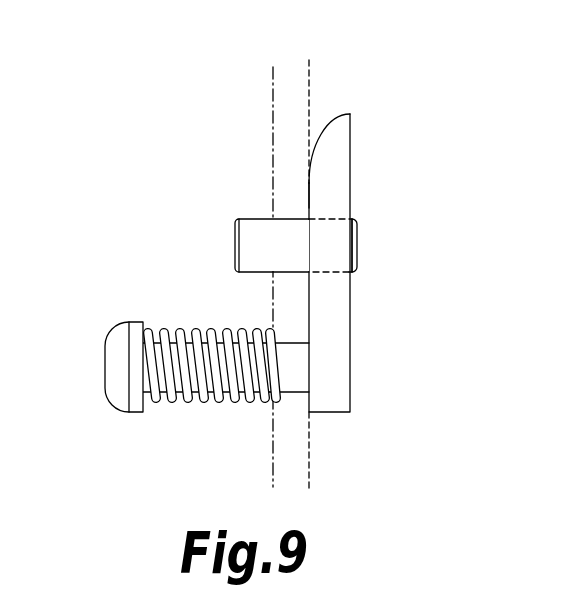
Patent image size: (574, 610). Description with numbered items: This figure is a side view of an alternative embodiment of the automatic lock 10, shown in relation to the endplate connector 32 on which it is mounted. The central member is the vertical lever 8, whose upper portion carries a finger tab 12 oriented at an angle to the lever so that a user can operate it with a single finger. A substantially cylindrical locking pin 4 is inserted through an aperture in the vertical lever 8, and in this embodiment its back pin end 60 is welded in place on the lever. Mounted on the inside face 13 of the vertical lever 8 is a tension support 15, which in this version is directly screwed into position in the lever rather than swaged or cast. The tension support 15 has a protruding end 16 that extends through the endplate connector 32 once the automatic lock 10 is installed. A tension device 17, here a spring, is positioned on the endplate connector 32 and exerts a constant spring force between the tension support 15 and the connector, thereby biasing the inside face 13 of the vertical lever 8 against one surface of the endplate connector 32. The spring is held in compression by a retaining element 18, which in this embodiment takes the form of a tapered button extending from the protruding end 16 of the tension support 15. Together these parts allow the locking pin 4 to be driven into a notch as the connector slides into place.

The locking pin 4 is at (240, 218).
The vertical lever 8 is at (350, 322).
The automatic lock 10 is at (237, 188).
The finger tab 12 is at (350, 135).
The inside face 13 is at (310, 208).
The tension support 15 is at (290, 370).
The protruding end 16 is at (167, 398).
The tension device 17 is at (257, 398).
The retaining element 18 is at (120, 336).
The endplate connector 32 is at (271, 90).
The back pin end 60 is at (357, 242).